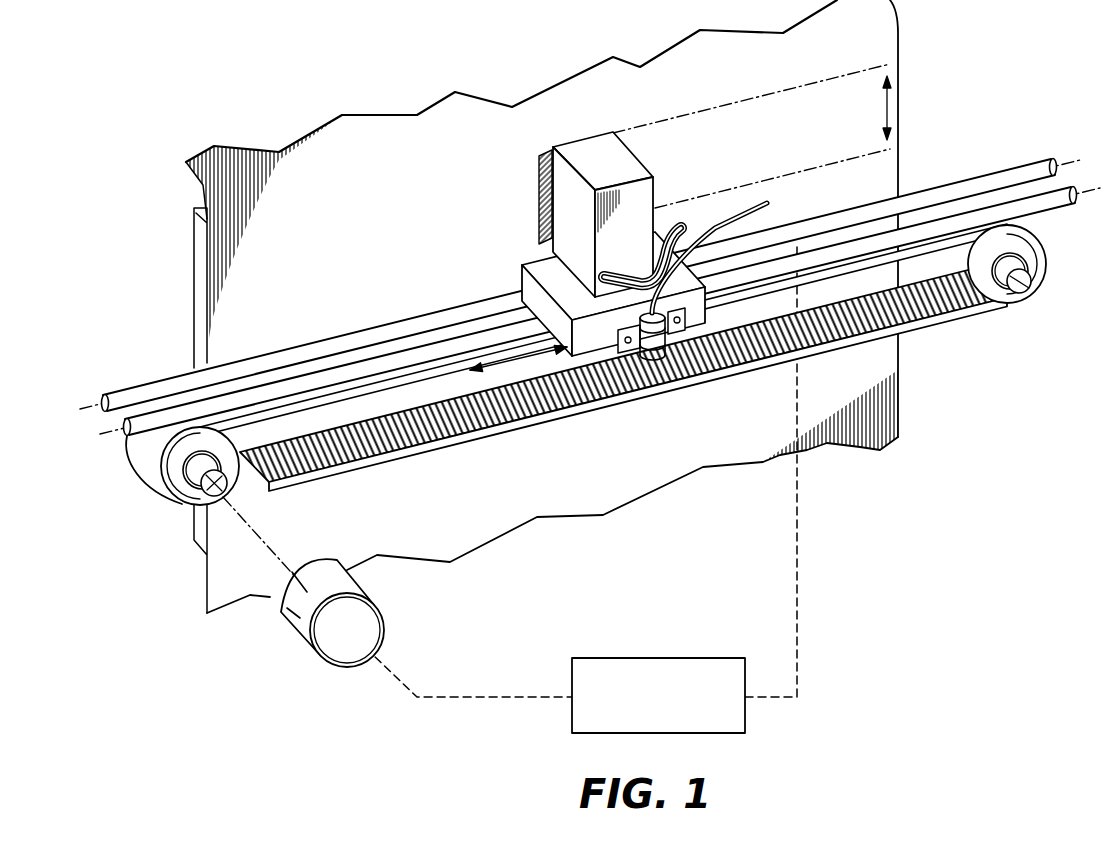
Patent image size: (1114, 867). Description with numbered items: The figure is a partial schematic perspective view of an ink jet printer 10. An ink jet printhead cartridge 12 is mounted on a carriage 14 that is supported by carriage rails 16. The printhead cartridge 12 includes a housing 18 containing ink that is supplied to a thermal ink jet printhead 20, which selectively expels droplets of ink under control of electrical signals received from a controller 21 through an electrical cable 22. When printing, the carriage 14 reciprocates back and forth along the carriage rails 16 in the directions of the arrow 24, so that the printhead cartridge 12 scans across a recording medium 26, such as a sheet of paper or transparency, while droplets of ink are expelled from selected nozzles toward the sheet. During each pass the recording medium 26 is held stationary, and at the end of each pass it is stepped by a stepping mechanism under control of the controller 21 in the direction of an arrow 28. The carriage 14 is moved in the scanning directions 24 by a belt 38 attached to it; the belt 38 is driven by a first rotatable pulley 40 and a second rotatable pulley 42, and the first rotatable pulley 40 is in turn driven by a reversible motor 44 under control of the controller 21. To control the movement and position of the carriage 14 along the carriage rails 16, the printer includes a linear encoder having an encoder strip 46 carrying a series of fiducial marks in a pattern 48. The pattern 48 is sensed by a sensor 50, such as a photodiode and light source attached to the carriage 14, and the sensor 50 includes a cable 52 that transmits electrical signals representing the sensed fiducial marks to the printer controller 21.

The ink jet printer 10 is at (272, 98).
The ink jet printhead cartridge 12 is at (598, 162).
The carriage 14 is at (539, 259).
The carriage rails 16 is at (337, 370).
The housing 18 is at (596, 143).
The thermal ink jet printhead 20 is at (547, 153).
The controller 21 is at (661, 658).
The electrical cable 22 is at (669, 233).
The arrow (scanning directions) 24 is at (538, 364).
The recording medium 26 is at (371, 123).
The arrow (stepping direction) 28 is at (886, 107).
The belt 38 is at (161, 482).
The first rotatable pulley 40 is at (185, 491).
The second rotatable pulley 42 is at (1033, 258).
The reversible motor 44 is at (331, 650).
The encoder strip 46 is at (592, 381).
The pattern 48 is at (918, 304).
The sensor 50 is at (666, 357).
The cable 52 is at (738, 218).